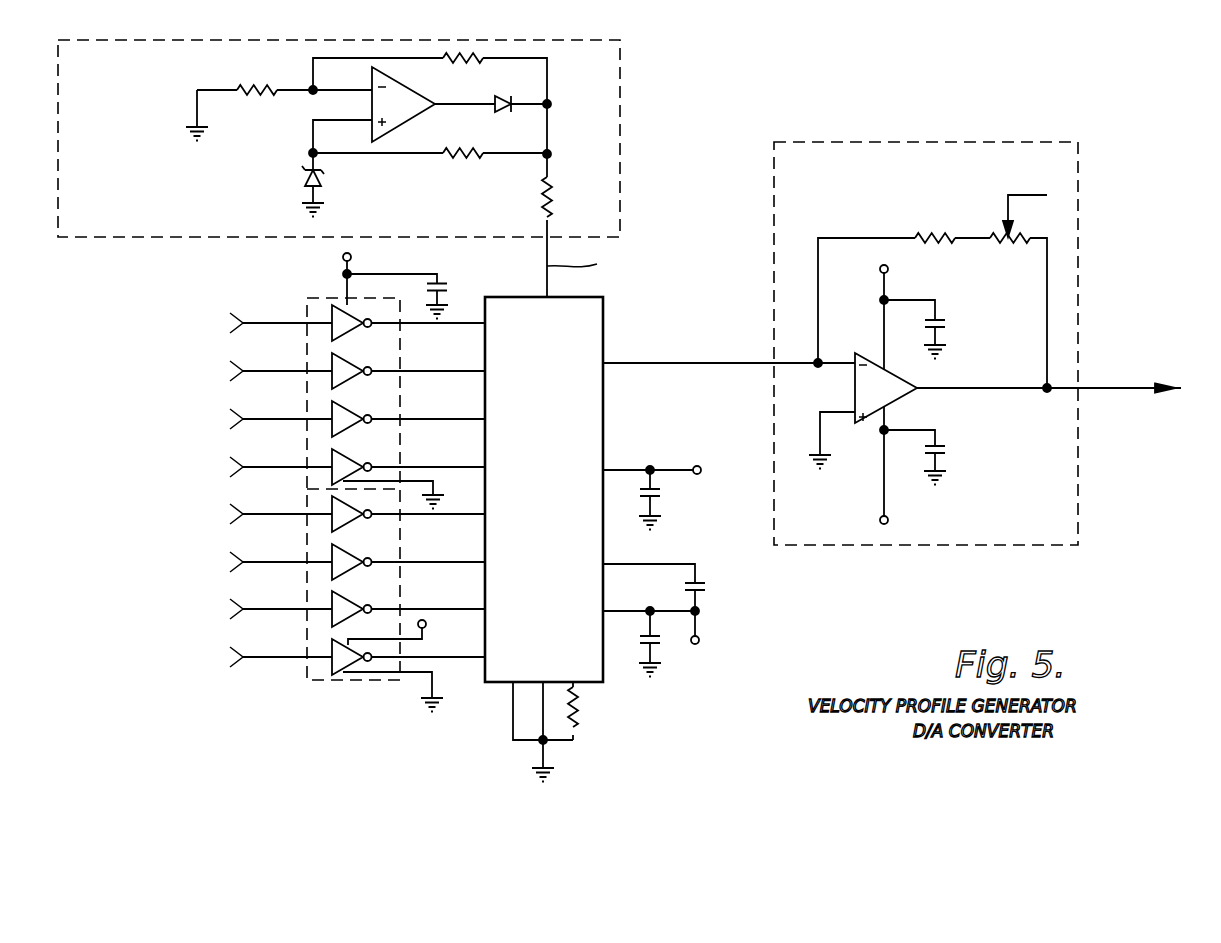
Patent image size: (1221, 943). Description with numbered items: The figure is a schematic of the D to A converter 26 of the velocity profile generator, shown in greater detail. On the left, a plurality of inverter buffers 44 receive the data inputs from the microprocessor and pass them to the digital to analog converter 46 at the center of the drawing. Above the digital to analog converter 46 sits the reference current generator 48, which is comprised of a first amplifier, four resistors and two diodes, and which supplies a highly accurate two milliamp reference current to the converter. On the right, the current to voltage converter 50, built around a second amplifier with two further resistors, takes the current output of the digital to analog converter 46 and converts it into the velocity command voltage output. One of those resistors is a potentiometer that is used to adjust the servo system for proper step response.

The D to A converter 26 is at (787, 587).
The inverter buffers 44 is at (307, 672).
The digital to analog converter 46 is at (603, 684).
The reference current generator 48 is at (620, 87).
The current to voltage converter 50 is at (1078, 186).